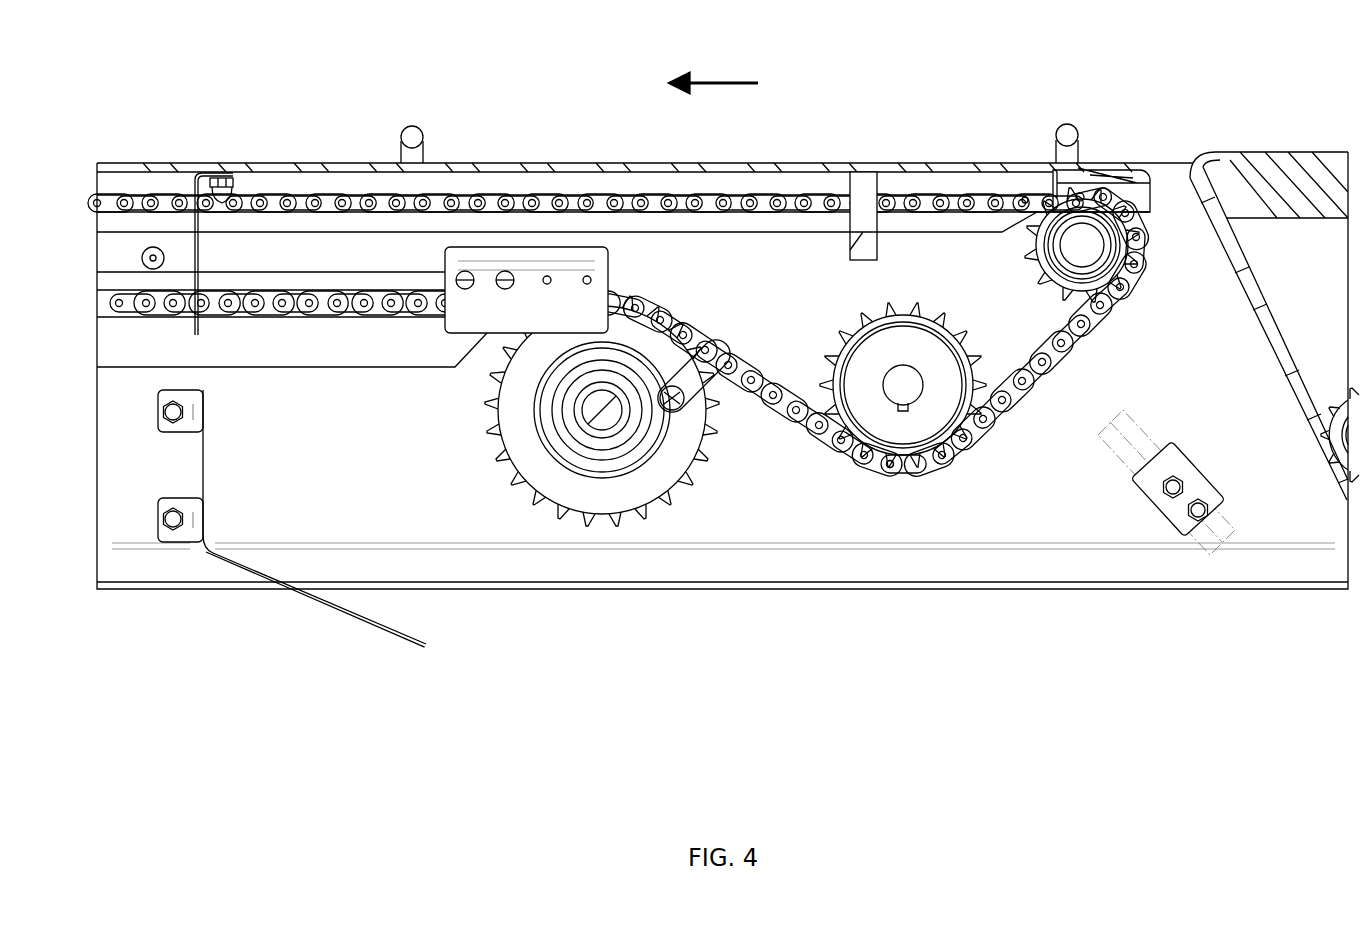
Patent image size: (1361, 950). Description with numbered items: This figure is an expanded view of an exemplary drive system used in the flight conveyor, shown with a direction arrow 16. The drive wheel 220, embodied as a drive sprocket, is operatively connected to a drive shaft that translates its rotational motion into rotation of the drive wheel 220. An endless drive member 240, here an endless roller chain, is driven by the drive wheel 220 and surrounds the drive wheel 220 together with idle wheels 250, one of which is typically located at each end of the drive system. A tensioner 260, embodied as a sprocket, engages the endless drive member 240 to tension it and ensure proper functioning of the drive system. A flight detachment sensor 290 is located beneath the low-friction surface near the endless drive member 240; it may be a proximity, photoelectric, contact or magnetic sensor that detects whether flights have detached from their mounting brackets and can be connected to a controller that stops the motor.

The conveying direction 16 is at (713, 68).
The drive wheel 220 is at (903, 430).
The endless drive member 240 is at (838, 455).
The idle wheel 250 is at (1082, 247).
The tensioner 260 is at (600, 487).
The flight detachment sensor 290 is at (1185, 537).